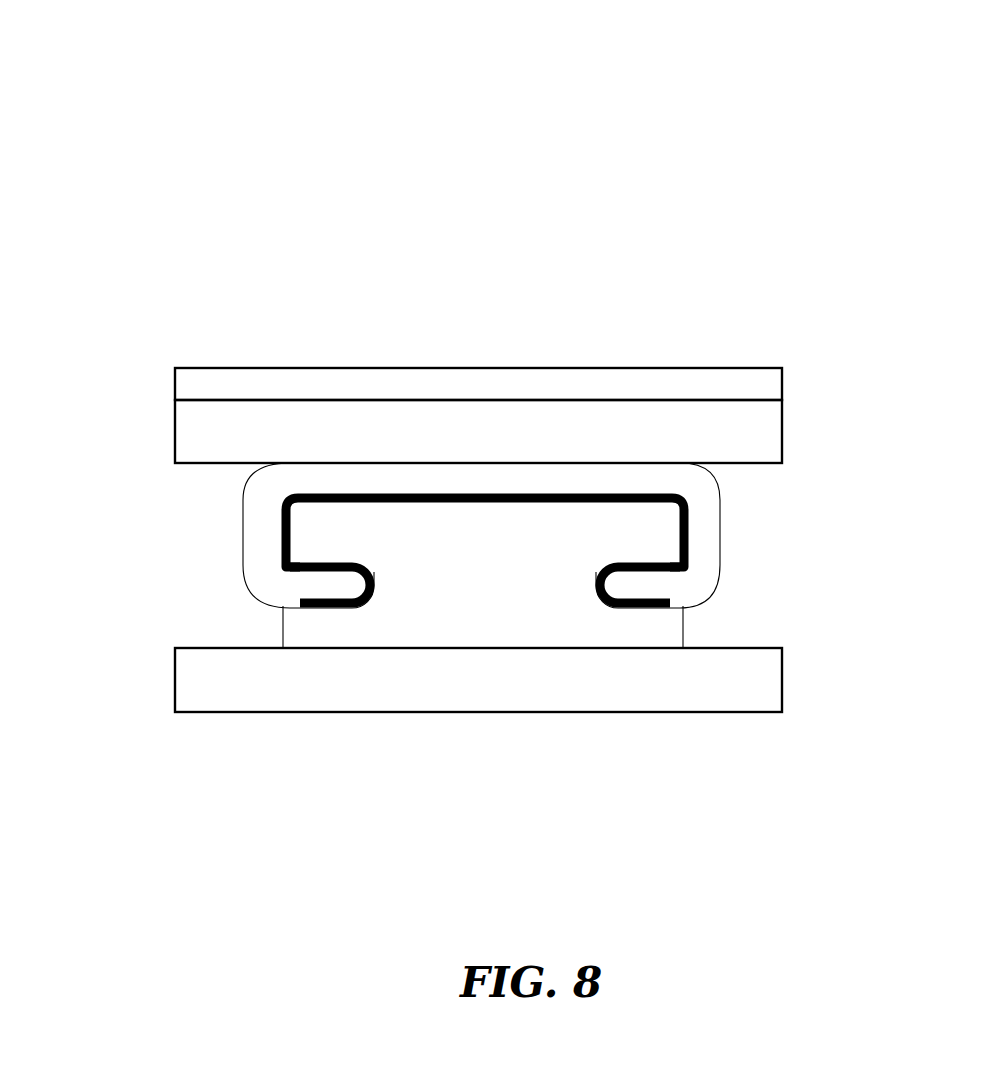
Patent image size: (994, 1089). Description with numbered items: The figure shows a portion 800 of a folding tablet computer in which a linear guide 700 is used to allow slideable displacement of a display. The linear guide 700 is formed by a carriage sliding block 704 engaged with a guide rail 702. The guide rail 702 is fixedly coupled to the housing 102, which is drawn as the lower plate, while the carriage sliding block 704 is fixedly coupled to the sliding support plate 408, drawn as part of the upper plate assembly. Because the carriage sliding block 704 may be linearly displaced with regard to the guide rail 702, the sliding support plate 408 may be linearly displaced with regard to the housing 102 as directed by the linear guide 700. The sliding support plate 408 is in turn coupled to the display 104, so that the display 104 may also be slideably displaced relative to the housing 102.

The assembly 800 is at (278, 106).
The display 104 is at (240, 385).
The sliding support plate 408 is at (192, 445).
The housing 102 is at (280, 687).
The linear guide 700 is at (240, 567).
The guide rail 702 is at (685, 630).
The carriage sliding block 704 is at (702, 528).